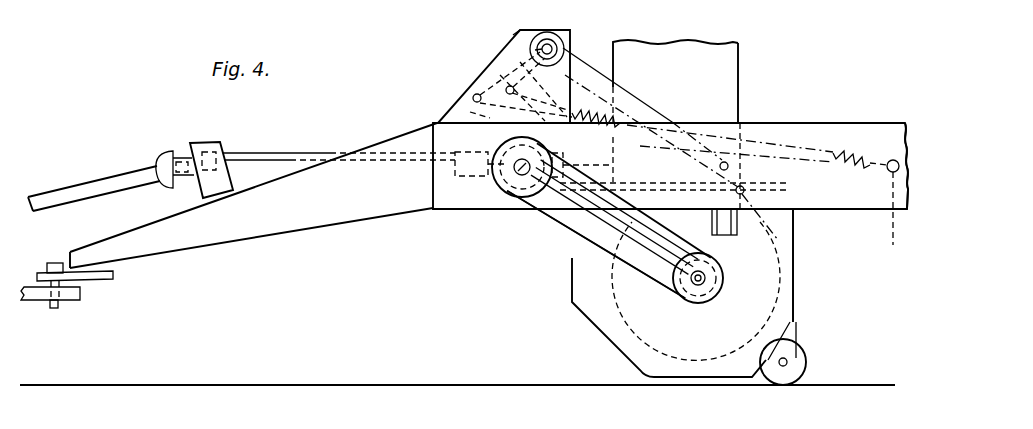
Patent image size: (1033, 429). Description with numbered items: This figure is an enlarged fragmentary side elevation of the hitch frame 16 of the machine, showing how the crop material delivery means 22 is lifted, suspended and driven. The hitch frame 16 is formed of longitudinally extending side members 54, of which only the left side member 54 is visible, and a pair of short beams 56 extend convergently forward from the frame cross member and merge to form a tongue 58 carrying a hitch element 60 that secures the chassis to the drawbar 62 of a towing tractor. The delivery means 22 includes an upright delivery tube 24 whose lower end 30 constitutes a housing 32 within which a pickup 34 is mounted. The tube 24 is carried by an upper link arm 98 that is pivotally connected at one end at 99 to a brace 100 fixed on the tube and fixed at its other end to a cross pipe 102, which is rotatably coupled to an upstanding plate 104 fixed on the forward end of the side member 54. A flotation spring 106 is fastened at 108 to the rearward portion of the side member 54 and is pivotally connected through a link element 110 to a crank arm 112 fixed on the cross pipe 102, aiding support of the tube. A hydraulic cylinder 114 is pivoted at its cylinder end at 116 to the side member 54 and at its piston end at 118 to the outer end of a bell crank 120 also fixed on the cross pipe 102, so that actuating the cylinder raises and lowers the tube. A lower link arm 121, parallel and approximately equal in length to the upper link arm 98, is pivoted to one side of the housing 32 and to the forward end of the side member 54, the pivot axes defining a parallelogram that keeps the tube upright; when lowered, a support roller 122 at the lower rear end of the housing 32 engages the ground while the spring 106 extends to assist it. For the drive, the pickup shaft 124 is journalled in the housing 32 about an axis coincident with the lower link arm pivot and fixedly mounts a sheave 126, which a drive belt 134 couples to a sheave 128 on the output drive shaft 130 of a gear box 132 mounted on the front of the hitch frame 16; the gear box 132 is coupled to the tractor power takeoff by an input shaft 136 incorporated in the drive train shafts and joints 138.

The hitch frame 16 is at (464, 216).
The crop material delivery means 22 is at (750, 61).
The delivery tube 24 is at (742, 85).
The lower end 30 is at (793, 268).
The housing 32 is at (608, 318).
The pickup 34 is at (780, 296).
The side member 54 is at (840, 211).
The short beam 56 is at (307, 222).
The tongue 58 is at (180, 260).
The hitch element 60 is at (38, 273).
The drawbar 62 is at (82, 294).
The upper link arm 98 is at (588, 68).
The pivotal connection 99 is at (746, 137).
The brace 100 is at (723, 231).
The cross pipe 102 is at (535, 50).
The upstanding plate 104 is at (513, 35).
The flotation spring 106 is at (792, 137).
The fastening point 108 is at (888, 217).
The link element 110 is at (470, 112).
The crank arm 112 is at (478, 94).
The hydraulic cylinder 114 is at (665, 171).
The cylinder end pivot 116 is at (794, 240).
The piston end pivot 118 is at (475, 104).
The bell crank 120 is at (508, 86).
The lower link arm 121 is at (588, 214).
The support roller 122 is at (802, 355).
The shaft 124 is at (717, 297).
The sheave 126 is at (687, 302).
The sheave 128 is at (514, 197).
The output drive shaft 130 is at (512, 176).
The gear box 132 is at (553, 144).
The drive belt 134 is at (557, 229).
The input shaft 136 is at (78, 184).
The drive train shafts and joints 138 is at (286, 140).